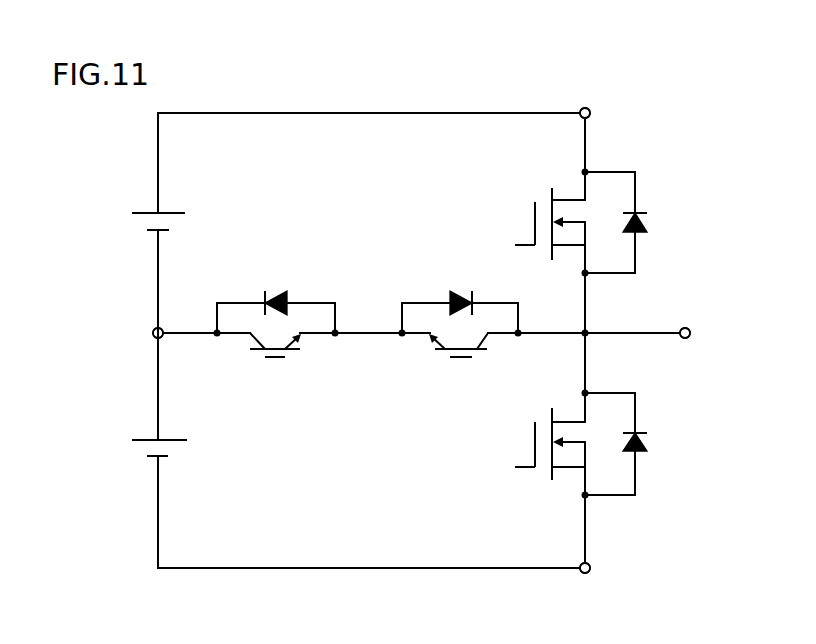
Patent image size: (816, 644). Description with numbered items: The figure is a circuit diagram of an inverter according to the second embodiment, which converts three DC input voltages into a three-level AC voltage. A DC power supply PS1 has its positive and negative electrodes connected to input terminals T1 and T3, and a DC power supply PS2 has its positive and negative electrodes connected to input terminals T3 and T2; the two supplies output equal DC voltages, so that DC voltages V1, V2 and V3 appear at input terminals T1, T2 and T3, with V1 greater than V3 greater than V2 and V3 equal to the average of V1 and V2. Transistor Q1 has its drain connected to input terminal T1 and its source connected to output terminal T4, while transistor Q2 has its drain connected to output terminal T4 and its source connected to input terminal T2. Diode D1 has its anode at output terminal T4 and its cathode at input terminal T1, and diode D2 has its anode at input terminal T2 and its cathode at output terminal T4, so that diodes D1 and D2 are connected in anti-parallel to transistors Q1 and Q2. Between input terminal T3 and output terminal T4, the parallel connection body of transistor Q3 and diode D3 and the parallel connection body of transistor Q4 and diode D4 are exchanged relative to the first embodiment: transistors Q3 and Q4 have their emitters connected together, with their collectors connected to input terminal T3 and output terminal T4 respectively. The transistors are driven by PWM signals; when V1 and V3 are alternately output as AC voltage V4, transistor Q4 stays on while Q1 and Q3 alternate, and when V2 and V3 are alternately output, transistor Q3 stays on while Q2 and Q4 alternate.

The DC voltage V1 is at (584, 99).
The DC voltage V2 is at (584, 582).
The DC voltage V3 is at (139, 335).
The three-level AC voltage V4 is at (703, 335).
The input terminal T1 is at (591, 113).
The input terminal T2 is at (591, 568).
The input terminal T3 is at (164, 338).
The output terminal T4 is at (685, 339).
The DC power supply PS1 is at (147, 212).
The DC power supply PS2 is at (148, 440).
The transistor Q1 is at (528, 222).
The transistor Q2 is at (528, 442).
The transistor Q3 is at (457, 358).
The transistor Q4 is at (281, 358).
The diode D1 is at (650, 219).
The diode D2 is at (650, 439).
The diode D3 is at (460, 293).
The diode D4 is at (268, 293).